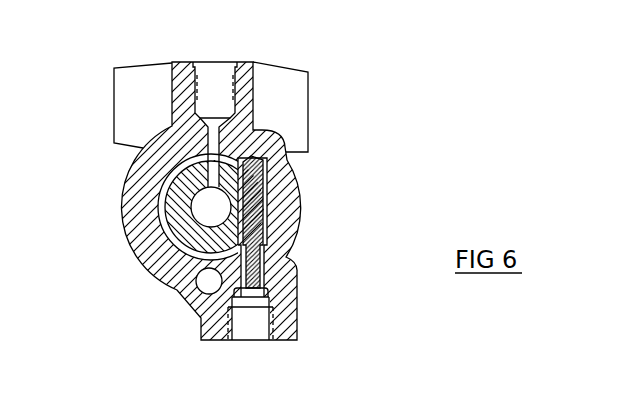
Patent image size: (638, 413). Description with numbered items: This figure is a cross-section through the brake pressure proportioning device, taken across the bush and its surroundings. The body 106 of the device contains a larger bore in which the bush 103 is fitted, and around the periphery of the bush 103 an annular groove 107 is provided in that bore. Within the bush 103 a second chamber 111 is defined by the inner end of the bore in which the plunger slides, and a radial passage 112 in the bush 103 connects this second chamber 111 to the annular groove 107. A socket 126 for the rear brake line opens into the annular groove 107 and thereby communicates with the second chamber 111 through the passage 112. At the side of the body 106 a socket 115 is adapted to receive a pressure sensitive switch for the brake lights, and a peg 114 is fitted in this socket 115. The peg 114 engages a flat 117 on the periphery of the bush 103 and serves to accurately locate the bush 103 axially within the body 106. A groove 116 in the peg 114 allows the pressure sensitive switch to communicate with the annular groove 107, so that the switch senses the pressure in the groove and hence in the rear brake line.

The body 106 is at (300, 208).
The socket 126 is at (213, 77).
The radial passage 112 is at (210, 175).
The annular groove 107 is at (160, 207).
The bush 103 is at (181, 191).
The second chamber 111 is at (206, 206).
The groove 116 is at (192, 268).
The flat 117 is at (253, 181).
The peg 114 is at (256, 221).
The socket 115 is at (248, 330).